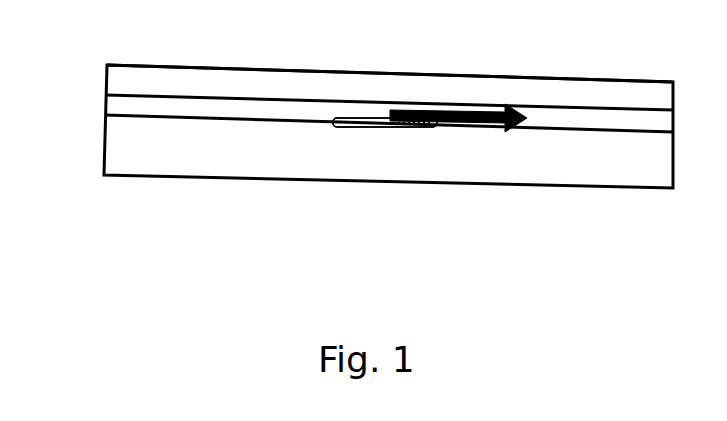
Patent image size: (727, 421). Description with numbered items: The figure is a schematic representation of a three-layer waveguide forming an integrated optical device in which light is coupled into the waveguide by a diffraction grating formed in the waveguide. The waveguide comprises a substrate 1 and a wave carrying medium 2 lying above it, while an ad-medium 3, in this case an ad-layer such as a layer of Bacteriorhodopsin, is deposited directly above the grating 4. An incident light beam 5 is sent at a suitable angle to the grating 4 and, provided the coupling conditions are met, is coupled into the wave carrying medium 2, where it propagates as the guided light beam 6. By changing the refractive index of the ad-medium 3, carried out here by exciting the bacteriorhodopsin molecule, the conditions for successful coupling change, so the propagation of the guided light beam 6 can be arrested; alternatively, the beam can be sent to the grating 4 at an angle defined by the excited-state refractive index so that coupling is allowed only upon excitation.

The substrate 1 is at (388, 126).
The wave carrying medium 2 is at (389, 113).
The ad-medium 3 is at (390, 79).
The grating 4 is at (385, 137).
The incident light beam 5 is at (386, 119).
The guided light beam 6 is at (488, 110).